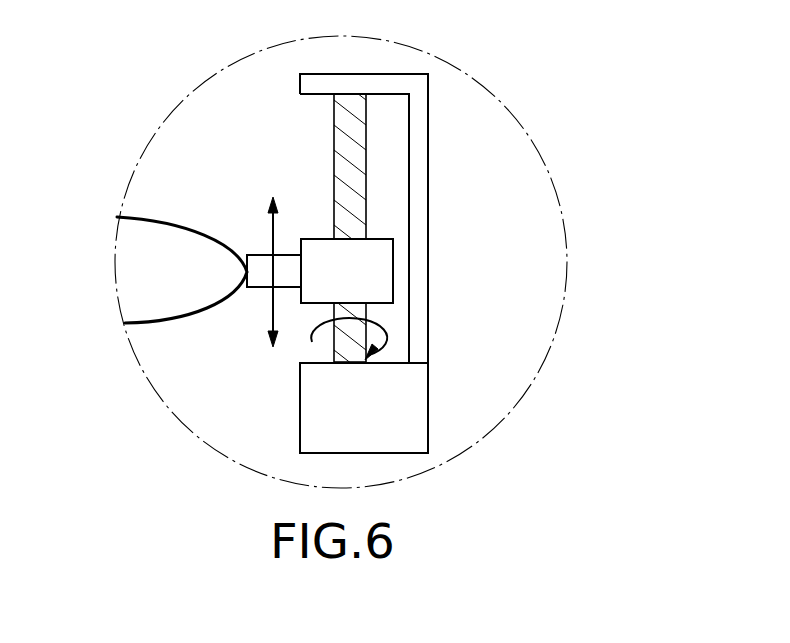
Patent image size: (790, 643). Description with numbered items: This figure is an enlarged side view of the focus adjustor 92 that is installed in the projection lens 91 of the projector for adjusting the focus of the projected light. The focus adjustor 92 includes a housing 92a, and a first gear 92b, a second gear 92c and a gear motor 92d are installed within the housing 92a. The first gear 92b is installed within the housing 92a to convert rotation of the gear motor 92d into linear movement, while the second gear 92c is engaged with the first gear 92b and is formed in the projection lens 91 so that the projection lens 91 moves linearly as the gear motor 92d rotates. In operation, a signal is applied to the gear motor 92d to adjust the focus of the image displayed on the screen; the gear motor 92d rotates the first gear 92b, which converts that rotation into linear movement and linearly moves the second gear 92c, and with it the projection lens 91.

The projection lens 91 is at (125, 262).
The focus adjustor 92 is at (645, 425).
The housing 92a is at (428, 212).
The first gear 92b is at (362, 309).
The second gear 92c is at (382, 270).
The gear motor 92d is at (400, 412).